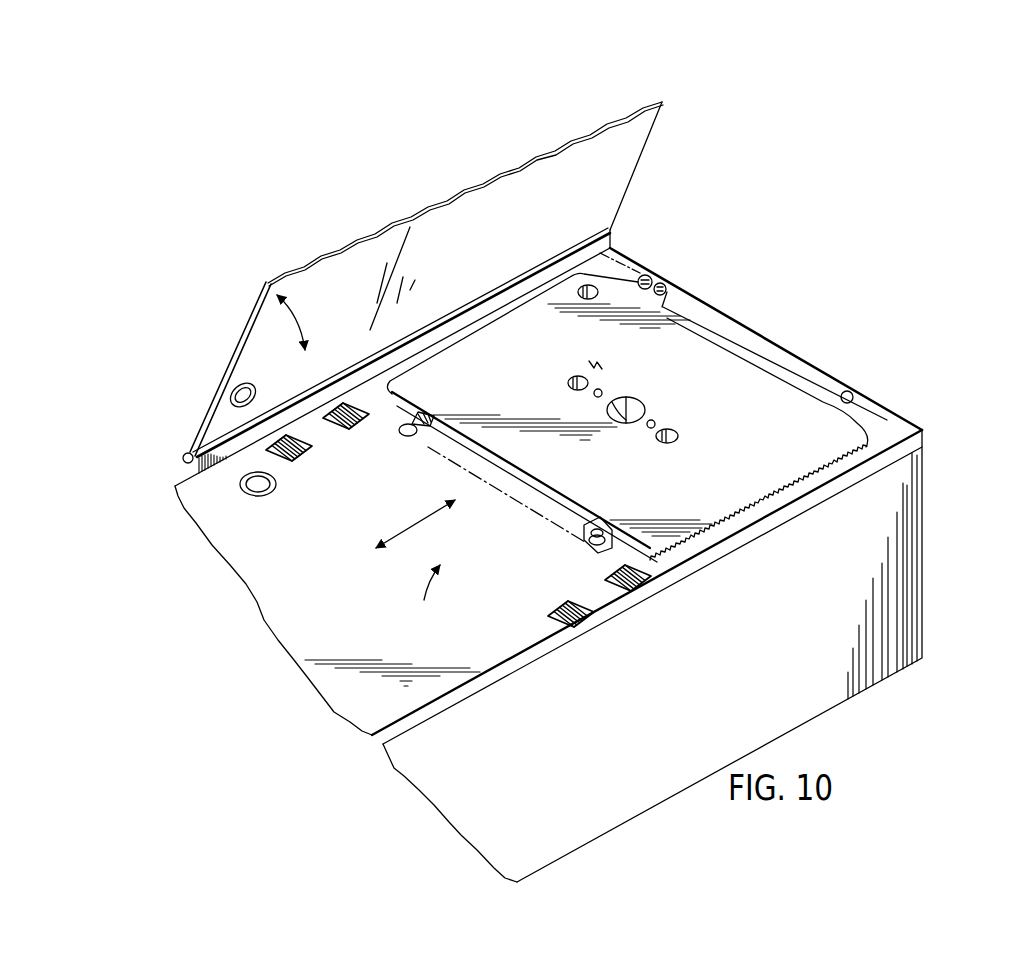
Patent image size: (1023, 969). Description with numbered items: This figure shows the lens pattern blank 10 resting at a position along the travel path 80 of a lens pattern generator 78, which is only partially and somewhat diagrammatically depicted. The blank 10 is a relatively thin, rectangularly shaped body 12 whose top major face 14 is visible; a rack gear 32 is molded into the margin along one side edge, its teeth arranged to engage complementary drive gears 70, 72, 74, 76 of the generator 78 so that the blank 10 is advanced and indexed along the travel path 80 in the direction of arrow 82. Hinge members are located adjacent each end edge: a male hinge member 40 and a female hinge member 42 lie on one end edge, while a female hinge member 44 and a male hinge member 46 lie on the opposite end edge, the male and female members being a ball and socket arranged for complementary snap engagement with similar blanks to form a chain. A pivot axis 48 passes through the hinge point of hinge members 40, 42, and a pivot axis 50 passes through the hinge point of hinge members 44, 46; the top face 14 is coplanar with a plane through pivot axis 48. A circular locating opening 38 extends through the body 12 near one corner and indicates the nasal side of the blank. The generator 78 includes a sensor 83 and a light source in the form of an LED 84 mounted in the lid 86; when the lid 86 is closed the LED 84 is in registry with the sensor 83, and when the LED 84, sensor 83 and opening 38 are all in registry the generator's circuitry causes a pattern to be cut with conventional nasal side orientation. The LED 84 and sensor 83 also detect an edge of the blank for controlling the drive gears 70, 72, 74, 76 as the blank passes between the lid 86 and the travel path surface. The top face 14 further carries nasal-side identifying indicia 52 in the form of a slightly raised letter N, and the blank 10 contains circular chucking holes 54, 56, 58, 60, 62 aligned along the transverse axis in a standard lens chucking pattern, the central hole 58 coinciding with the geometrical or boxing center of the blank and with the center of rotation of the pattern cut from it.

The blank 10 is at (536, 291).
The body 12 is at (413, 360).
The top major face 14 is at (783, 449).
The rack gear 32 is at (838, 466).
The locating opening 38 is at (599, 293).
The male hinge member 40 is at (854, 392).
The female hinge member 42 is at (661, 274).
The female hinge member 44 is at (582, 538).
The male hinge member 46 is at (403, 438).
The pivot axis 48 is at (886, 417).
The pivot axis 50 is at (519, 498).
The fastener hole 52 is at (589, 364).
The chucking hole 54 is at (568, 382).
The chucking hole 56 is at (602, 389).
The chucking hole 58 is at (635, 403).
The chucking hole 60 is at (656, 421).
The chucking hole 62 is at (679, 436).
The drive gear 70 is at (610, 574).
The drive gear 72 is at (549, 612).
The drive gear 74 is at (342, 428).
The drive gear 76 is at (303, 453).
The lens pattern generator 78 is at (930, 447).
The travel path 80 is at (432, 597).
The arrow 82 is at (418, 521).
The sensor 83 is at (241, 489).
The LED 84 is at (252, 385).
The lid 86 is at (611, 170).